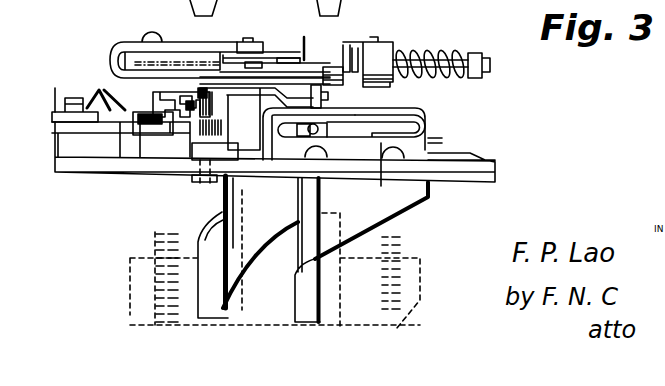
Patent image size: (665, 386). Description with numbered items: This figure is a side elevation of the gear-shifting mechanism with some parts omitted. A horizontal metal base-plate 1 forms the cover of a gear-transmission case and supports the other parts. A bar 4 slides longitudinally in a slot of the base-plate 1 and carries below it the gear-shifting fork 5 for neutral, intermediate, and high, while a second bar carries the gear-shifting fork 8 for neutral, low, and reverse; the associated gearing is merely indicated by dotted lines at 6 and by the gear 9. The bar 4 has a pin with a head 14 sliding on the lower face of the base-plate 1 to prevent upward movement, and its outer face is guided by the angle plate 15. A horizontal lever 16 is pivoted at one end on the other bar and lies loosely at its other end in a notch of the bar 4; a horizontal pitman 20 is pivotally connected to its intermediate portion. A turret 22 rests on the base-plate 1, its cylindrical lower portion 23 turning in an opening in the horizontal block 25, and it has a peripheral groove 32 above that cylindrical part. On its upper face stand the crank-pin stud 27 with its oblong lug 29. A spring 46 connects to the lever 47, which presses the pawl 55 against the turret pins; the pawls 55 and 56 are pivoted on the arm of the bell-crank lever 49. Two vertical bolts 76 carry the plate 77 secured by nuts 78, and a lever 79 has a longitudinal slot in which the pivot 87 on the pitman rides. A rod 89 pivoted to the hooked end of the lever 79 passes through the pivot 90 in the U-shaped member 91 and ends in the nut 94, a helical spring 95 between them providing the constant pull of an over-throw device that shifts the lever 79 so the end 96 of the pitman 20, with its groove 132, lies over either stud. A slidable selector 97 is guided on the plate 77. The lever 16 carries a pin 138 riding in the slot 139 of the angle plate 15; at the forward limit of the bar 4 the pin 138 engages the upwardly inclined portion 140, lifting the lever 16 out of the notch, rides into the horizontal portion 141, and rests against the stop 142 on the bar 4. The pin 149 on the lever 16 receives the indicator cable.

The base-plate 1 is at (498, 173).
The bar 4 is at (345, 120).
The gear-shifting fork 5 is at (307, 250).
The gearing 6 is at (402, 263).
The gear-shifting fork 8 is at (248, 247).
The gear 9 is at (158, 236).
The head 14 is at (205, 186).
The angle plate 15 is at (428, 129).
The horizontal lever 16 is at (327, 136).
The pitman 20 is at (260, 87).
The turret 22 is at (136, 112).
The cylindrical lower portion 23 is at (155, 134).
The horizontal block 25 is at (121, 139).
The stud 27 is at (172, 112).
The lug 29 is at (183, 97).
The peripheral groove 32 is at (222, 127).
The spring 46 is at (102, 88).
The lever 47 is at (53, 92).
The bell-crank lever 49 is at (442, 138).
The pawl 55 is at (94, 133).
The pawl 56 is at (148, 125).
The vertical bolts 76 is at (246, 38).
The plate 77 is at (128, 67).
The nuts 78 is at (263, 45).
The lever 79 is at (140, 77).
The pivot 87 is at (185, 42).
The rod 89 is at (320, 52).
The pivot 90 is at (377, 37).
The U-shaped member 91 is at (386, 50).
The nut 94 is at (482, 53).
The helical spring 95 is at (443, 52).
The end of the pitman 96 is at (214, 113).
The selector 97 is at (302, 38).
The transverse recess or groove 132 is at (215, 165).
The pin 138 is at (292, 134).
The slot 139 is at (355, 120).
The upwardly inclined portion 140 is at (381, 186).
The horizontal portion 141 is at (444, 143).
The stop 142 is at (403, 116).
The pin 149 is at (316, 85).